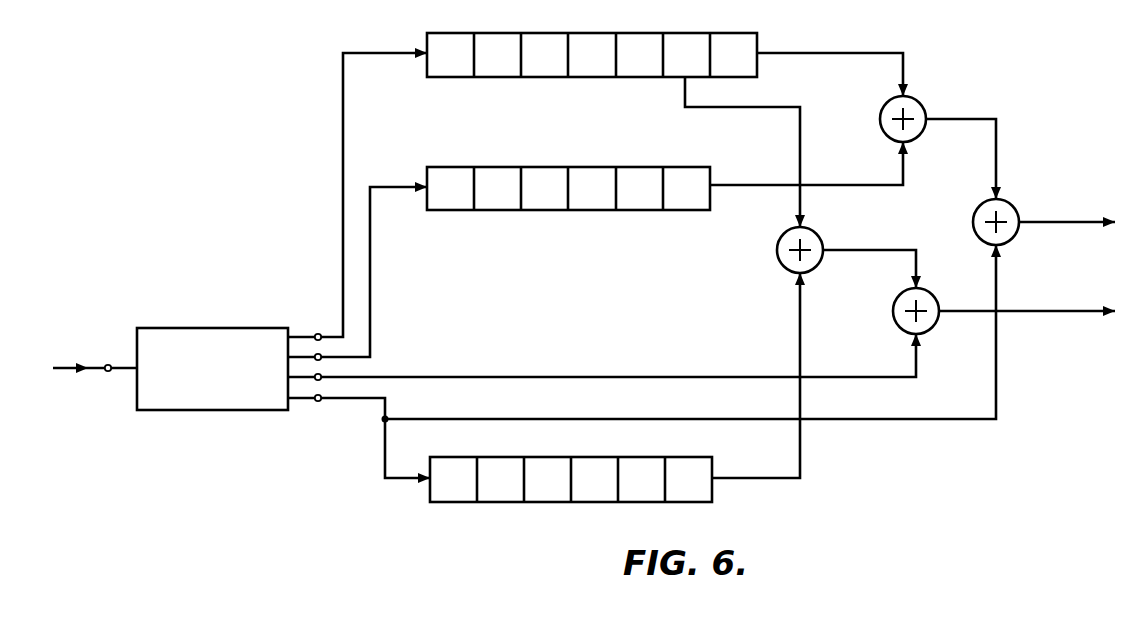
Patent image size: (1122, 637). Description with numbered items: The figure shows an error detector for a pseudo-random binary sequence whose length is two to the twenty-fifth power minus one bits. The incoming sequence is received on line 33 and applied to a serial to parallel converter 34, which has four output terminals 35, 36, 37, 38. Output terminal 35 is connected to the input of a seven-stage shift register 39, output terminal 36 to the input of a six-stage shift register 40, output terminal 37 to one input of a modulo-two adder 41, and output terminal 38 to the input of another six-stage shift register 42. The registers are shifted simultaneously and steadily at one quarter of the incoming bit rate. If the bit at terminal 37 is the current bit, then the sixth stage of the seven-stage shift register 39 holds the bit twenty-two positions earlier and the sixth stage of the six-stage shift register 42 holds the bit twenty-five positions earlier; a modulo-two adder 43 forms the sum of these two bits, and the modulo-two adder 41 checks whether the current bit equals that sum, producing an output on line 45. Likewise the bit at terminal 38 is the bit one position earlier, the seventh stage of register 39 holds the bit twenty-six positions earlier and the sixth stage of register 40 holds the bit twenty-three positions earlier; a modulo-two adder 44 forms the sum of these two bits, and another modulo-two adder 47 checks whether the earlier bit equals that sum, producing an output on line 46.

The line 33 is at (106, 365).
The serial to parallel converter 34 is at (248, 327).
The output terminal 35 is at (317, 334).
The output terminal 36 is at (322, 355).
The output terminal 37 is at (322, 381).
The output terminal 38 is at (318, 403).
The seven-stage shift register 39 is at (677, 32).
The six-stage shift register 40 is at (700, 168).
The modulo-2 adder 41 is at (937, 298).
The six-stage shift register 42 is at (702, 458).
The modulo-2 adder 43 is at (825, 236).
The modulo-2 adder 44 is at (920, 100).
The line 45 is at (1062, 310).
The line 46 is at (1080, 218).
The modulo-2 adder 47 is at (1016, 206).